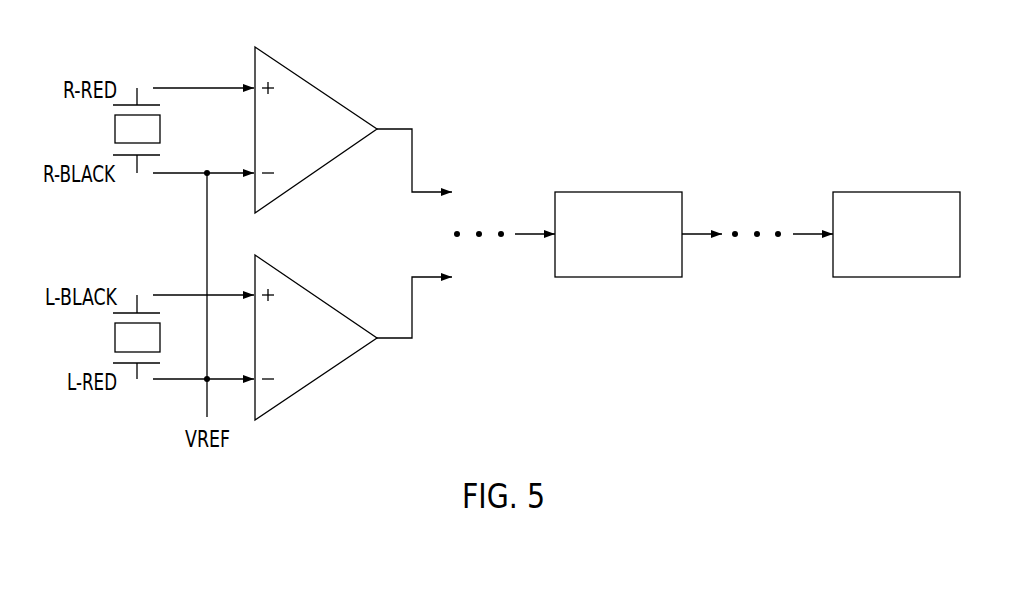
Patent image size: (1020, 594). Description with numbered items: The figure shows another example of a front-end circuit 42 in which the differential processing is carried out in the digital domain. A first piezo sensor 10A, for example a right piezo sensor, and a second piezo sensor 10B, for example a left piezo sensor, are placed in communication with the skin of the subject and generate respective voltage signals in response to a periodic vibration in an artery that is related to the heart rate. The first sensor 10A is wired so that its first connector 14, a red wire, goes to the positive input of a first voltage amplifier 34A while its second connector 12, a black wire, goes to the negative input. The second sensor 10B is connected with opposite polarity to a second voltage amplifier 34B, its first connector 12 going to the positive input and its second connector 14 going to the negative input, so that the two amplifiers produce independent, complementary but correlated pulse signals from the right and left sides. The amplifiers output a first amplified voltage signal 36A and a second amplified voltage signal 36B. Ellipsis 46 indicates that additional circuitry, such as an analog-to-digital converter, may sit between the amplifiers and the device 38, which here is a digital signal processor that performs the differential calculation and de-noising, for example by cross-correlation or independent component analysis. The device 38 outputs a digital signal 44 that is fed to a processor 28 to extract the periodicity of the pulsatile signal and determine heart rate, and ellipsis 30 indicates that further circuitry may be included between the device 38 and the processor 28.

The first piezo sensor 10A is at (115, 123).
The second piezo sensor 10B is at (115, 332).
The second connector 12 is at (188, 176).
The first connector 14 is at (193, 86).
The processor 28 is at (898, 192).
The ellipsis 30 is at (757, 227).
The first voltage amplifier 34A is at (320, 84).
The second voltage amplifier 34B is at (320, 293).
The first amplified voltage signal 36A is at (390, 128).
The second amplified voltage signal 36B is at (390, 340).
The device 38 is at (620, 192).
The front-end circuit 42 is at (860, 84).
The digital signal 44 is at (698, 238).
The ellipsis 46 is at (480, 225).